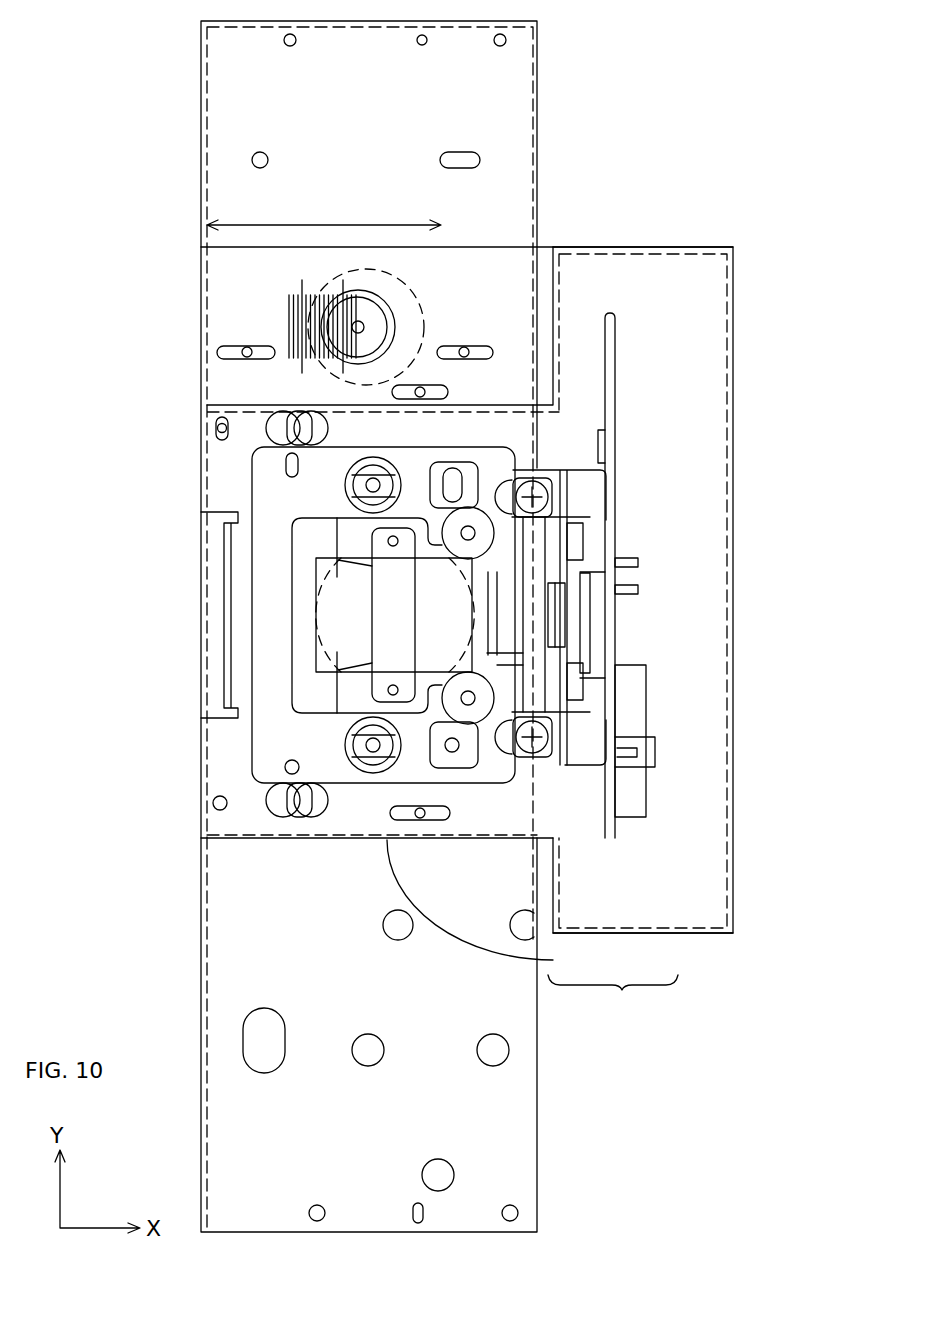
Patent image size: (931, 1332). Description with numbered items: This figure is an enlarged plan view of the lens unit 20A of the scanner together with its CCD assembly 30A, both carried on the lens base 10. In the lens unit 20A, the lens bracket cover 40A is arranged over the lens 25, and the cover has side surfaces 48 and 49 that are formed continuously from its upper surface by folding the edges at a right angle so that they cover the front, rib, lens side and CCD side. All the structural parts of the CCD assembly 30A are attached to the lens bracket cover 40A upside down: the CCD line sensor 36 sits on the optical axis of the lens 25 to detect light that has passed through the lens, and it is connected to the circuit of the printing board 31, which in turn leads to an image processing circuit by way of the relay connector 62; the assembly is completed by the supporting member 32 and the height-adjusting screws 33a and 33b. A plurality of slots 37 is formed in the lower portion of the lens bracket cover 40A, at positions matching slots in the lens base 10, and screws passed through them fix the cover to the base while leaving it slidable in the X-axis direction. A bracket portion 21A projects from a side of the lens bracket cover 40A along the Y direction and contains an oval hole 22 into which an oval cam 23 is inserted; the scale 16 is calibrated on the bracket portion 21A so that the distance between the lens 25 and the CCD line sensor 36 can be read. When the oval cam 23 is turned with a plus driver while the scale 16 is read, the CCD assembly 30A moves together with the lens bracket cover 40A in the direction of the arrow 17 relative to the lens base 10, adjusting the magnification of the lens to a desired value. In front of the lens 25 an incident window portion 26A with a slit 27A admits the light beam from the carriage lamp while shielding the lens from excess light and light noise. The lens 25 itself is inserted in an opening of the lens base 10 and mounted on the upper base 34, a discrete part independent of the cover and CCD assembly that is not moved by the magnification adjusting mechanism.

The lens base 10 is at (540, 68).
The arrow 17 is at (258, 222).
The bracket portion 21A is at (232, 272).
The oval hole 22 is at (372, 287).
The oval cam 23 is at (385, 318).
The scale 16 is at (290, 320).
The slots 37 is at (215, 350).
The upper base 34 is at (252, 492).
The slit 27A is at (200, 556).
The incident window portion 26A is at (200, 778).
The lens unit 20A is at (278, 597).
The lens 25 is at (330, 628).
The supporting member 32 is at (553, 508).
The height-adjusting screw 33a is at (540, 482).
The height-adjusting screw 33b is at (542, 757).
The printing board 31 is at (616, 519).
The CCD line sensor 36 is at (552, 628).
The relay connector 62 is at (648, 700).
The CCD assembly 30A is at (672, 592).
The side surface 48 is at (647, 935).
The side surface 49 is at (486, 910).
The lens bracket cover 40A is at (613, 994).